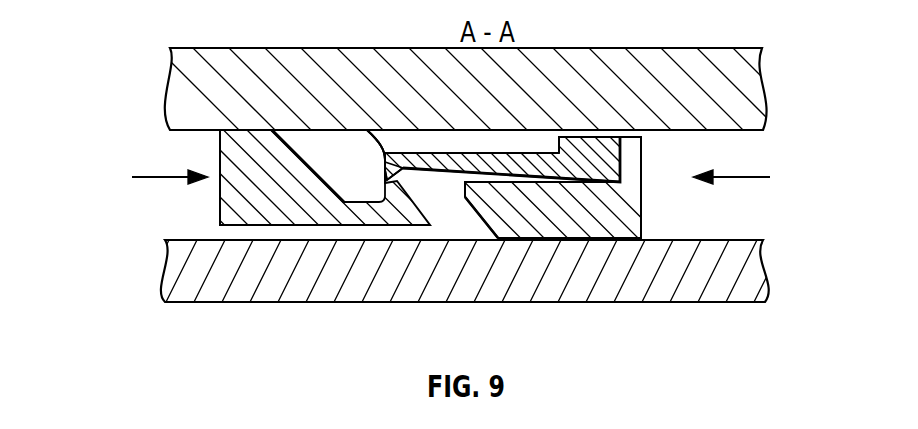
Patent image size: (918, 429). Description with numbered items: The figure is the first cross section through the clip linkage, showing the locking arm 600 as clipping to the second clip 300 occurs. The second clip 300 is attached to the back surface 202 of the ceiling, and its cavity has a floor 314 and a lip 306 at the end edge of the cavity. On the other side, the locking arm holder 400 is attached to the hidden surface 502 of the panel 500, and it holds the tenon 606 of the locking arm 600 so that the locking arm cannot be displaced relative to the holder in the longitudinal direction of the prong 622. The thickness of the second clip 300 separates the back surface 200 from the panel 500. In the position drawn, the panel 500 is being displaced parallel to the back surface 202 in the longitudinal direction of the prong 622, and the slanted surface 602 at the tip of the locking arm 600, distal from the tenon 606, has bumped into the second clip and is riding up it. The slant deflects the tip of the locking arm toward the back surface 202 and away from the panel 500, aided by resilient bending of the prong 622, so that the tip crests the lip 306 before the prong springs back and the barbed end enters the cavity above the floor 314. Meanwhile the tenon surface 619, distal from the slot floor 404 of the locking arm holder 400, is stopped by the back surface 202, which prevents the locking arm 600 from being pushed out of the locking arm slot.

The back surface 200 is at (487, 103).
The back surface 202 is at (298, 129).
The second clip 300 is at (247, 112).
The lip 306 is at (368, 130).
The floor 314 is at (358, 201).
The locking arm holder 400 is at (525, 185).
The slot floor 404 is at (590, 186).
The panel 500 is at (487, 285).
The hidden surface 502 is at (218, 240).
The locking arm 600 is at (516, 181).
The slanted surface 602 is at (391, 177).
The tenon 606 is at (601, 148).
The tenon surface 619 is at (573, 152).
The prong 622 is at (508, 158).